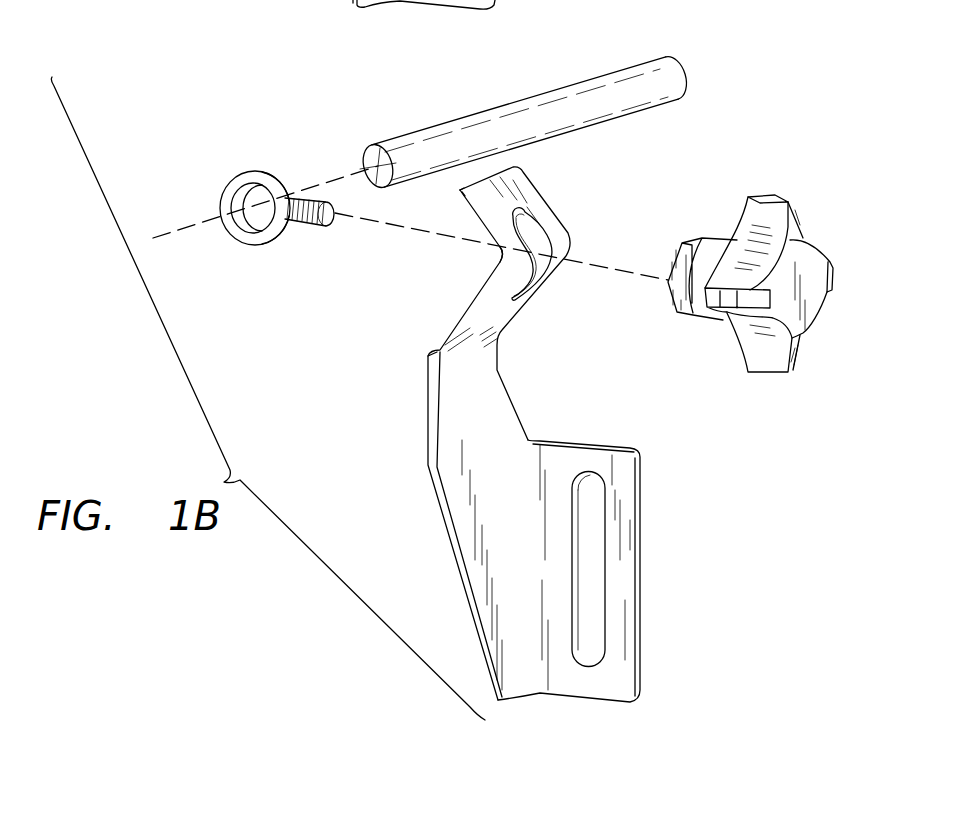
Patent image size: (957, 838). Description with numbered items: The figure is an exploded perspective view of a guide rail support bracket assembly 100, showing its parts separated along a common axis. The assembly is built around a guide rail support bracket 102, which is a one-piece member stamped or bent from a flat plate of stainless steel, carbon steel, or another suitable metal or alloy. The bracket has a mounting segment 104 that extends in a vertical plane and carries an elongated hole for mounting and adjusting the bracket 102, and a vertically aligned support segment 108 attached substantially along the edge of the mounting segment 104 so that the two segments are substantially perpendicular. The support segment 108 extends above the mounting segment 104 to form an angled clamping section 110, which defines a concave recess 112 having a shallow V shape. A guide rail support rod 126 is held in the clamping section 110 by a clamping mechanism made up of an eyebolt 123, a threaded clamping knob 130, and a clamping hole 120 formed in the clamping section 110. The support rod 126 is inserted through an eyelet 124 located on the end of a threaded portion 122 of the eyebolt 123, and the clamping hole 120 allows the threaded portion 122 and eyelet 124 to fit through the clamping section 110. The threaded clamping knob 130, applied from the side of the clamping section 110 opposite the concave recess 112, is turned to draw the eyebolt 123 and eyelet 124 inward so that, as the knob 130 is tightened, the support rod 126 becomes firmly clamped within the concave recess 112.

The guide rail support bracket assembly 100 is at (322, 76).
The guide rail support bracket 102 is at (765, 425).
The mounting segment 104 is at (640, 537).
The support segment 108 is at (534, 429).
The clamping section 110 is at (588, 215).
The concave recess 112 is at (472, 270).
The clamping hole 120 is at (525, 222).
The threaded portion 122 is at (309, 228).
The eyebolt 123 is at (240, 203).
The eyelet 124 is at (257, 172).
The guide rail support rod 126 is at (662, 72).
The threaded clamping knob 130 is at (787, 200).